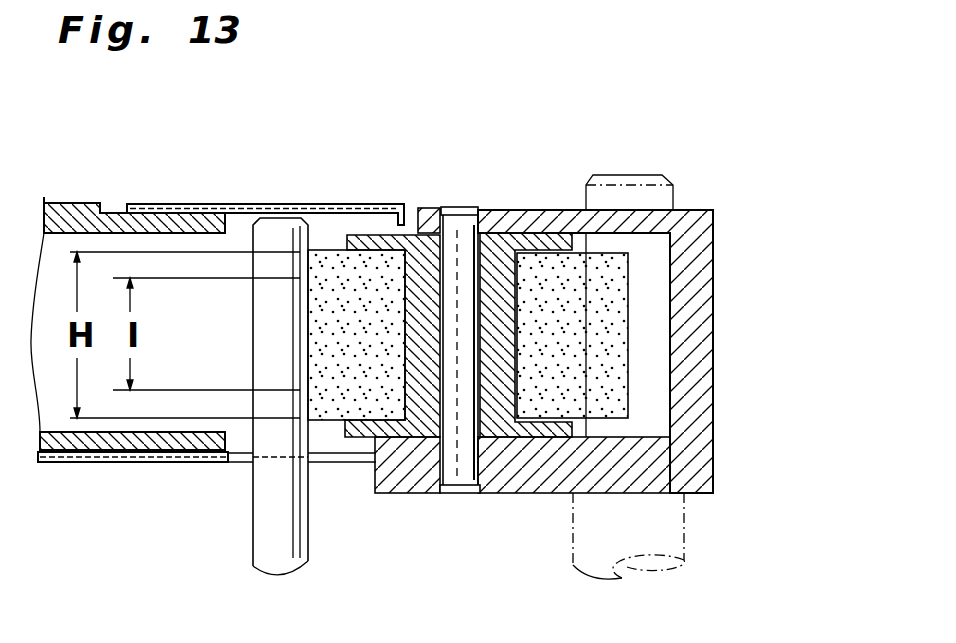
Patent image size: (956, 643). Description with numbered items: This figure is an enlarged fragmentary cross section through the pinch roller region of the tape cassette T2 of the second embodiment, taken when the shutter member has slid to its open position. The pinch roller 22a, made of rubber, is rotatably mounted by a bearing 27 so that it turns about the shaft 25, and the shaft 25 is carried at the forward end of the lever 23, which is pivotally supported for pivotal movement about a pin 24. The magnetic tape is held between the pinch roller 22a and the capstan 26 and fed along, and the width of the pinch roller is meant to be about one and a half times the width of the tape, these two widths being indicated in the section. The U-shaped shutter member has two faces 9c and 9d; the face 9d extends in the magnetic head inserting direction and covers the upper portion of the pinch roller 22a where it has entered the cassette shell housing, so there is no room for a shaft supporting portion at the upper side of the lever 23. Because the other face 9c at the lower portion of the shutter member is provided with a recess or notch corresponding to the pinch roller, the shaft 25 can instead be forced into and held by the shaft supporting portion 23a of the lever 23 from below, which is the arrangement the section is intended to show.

The tape cassette T2 is at (482, 171).
The face of shutter member 9c is at (165, 462).
The face of shutter member 9d is at (360, 204).
The pinch roller 22a is at (345, 392).
The lever 23 is at (700, 264).
The shaft supporting portion 23a is at (423, 463).
The pin 24 is at (652, 200).
The shaft 25 is at (463, 455).
The capstan 26 is at (270, 512).
The bearing 27 is at (417, 400).